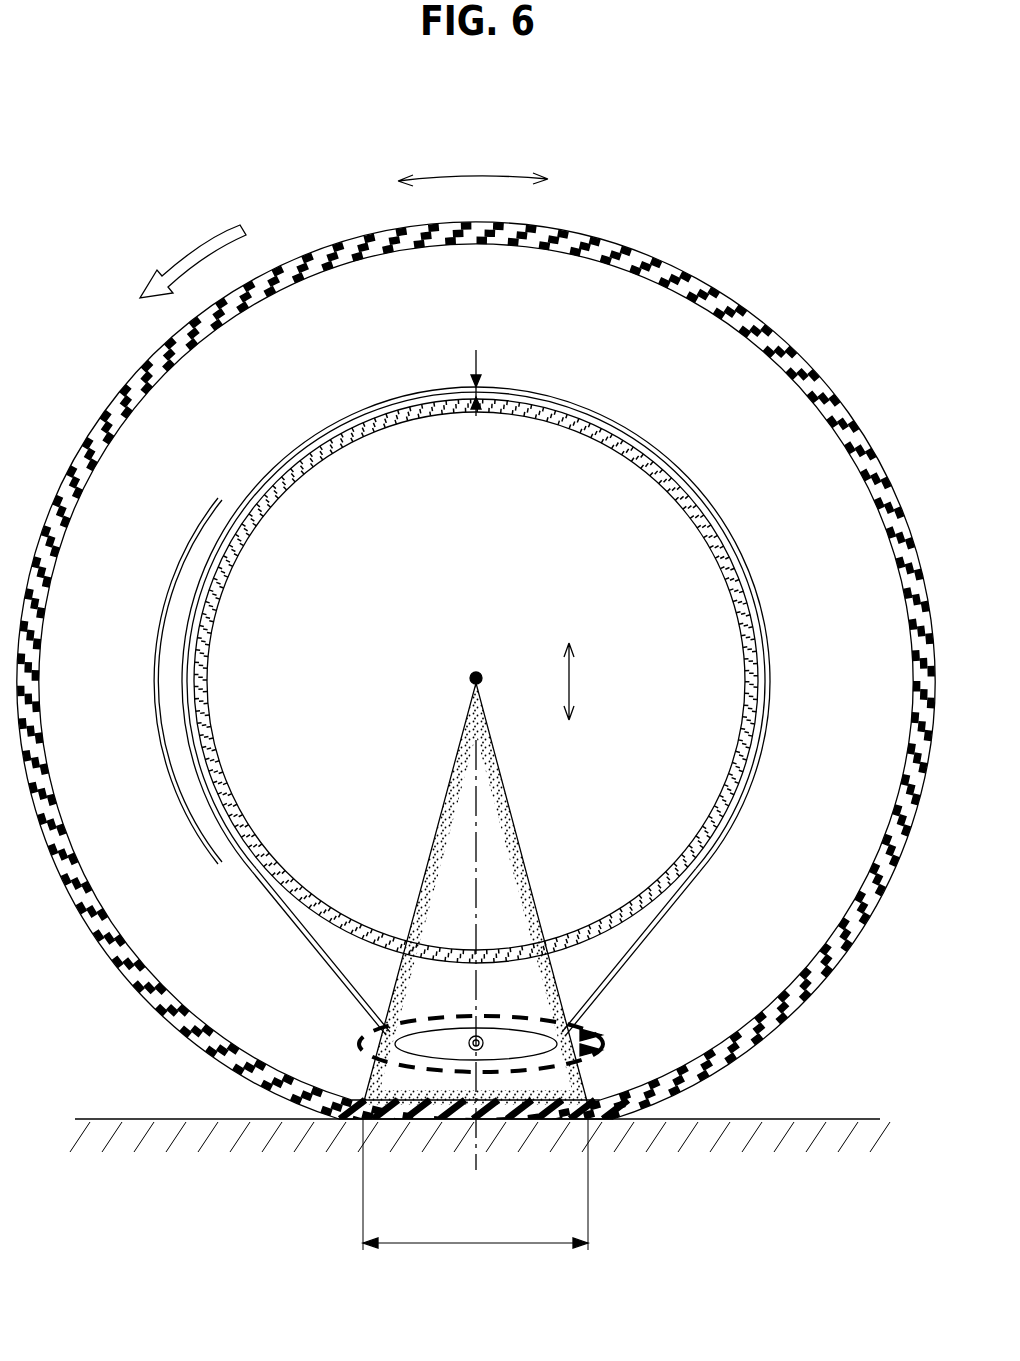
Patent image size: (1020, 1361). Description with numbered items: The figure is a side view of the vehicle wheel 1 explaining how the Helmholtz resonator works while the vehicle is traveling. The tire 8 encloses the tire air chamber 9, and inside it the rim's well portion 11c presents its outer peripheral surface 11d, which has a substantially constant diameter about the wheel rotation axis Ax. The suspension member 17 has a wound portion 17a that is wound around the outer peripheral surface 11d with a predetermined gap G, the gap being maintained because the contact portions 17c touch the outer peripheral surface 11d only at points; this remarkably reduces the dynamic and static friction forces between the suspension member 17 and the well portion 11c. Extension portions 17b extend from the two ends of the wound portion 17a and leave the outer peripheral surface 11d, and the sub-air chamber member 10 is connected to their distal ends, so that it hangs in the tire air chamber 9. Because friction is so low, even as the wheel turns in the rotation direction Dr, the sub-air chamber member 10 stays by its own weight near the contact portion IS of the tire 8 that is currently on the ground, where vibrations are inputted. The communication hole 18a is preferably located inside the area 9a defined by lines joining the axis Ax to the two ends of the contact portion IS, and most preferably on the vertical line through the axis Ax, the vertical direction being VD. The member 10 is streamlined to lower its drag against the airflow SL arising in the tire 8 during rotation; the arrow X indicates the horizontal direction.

The vehicle wheel 1 is at (725, 224).
The tire 8 is at (770, 334).
The tire air chamber 9 is at (122, 694).
The area 9a is at (523, 860).
The sub-air chamber member 10 is at (505, 1038).
The well portion 11c is at (211, 583).
The outer peripheral surface 11d is at (188, 681).
The suspension member 17 is at (856, 598).
The wound portion 17a is at (740, 546).
The extension portions 17b is at (622, 963).
The contact portions 17c is at (272, 476).
The communication hole 18a is at (468, 1040).
The airflow SL is at (585, 1067).
The wheel rotation axis Ax is at (476, 672).
The gap G is at (472, 392).
The direction X is at (487, 185).
The wheel rotation direction Dr is at (200, 252).
The vertical direction VD is at (571, 685).
The contact portion IS is at (475, 1184).